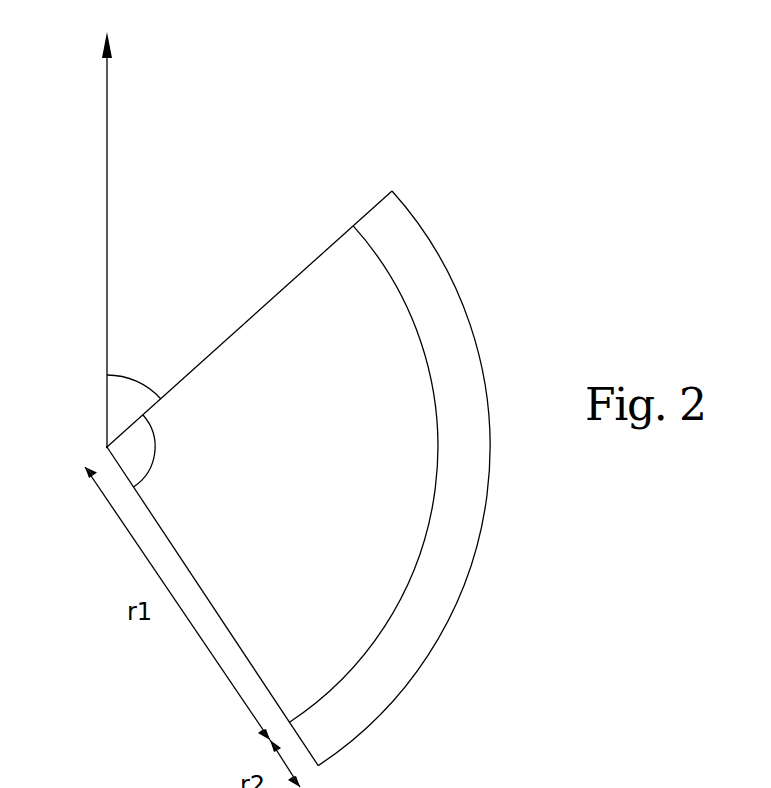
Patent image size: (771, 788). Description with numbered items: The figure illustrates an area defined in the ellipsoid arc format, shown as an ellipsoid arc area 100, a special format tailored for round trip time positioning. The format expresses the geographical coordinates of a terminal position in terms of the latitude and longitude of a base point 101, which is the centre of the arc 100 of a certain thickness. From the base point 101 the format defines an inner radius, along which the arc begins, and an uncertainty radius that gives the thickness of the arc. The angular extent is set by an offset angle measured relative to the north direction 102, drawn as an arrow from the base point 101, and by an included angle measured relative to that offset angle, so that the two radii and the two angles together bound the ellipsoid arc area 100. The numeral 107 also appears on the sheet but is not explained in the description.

The ellipsoid arc area 100 is at (397, 677).
The base point 101 is at (102, 447).
The north direction 102 is at (107, 204).
The reference numeral 107 is at (682, 774).